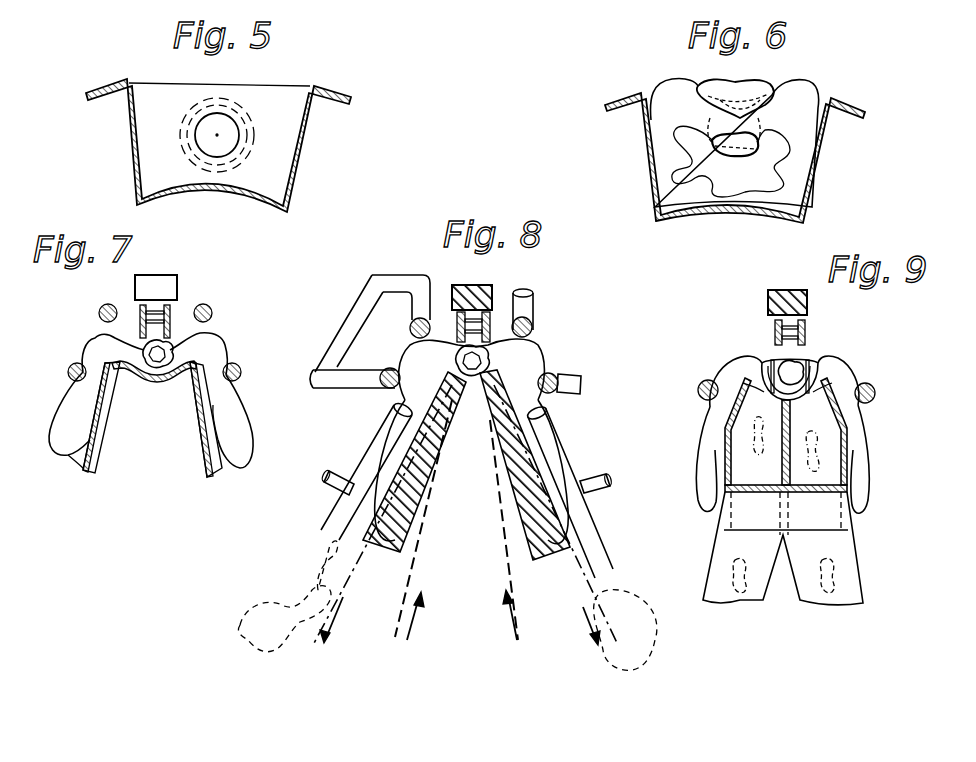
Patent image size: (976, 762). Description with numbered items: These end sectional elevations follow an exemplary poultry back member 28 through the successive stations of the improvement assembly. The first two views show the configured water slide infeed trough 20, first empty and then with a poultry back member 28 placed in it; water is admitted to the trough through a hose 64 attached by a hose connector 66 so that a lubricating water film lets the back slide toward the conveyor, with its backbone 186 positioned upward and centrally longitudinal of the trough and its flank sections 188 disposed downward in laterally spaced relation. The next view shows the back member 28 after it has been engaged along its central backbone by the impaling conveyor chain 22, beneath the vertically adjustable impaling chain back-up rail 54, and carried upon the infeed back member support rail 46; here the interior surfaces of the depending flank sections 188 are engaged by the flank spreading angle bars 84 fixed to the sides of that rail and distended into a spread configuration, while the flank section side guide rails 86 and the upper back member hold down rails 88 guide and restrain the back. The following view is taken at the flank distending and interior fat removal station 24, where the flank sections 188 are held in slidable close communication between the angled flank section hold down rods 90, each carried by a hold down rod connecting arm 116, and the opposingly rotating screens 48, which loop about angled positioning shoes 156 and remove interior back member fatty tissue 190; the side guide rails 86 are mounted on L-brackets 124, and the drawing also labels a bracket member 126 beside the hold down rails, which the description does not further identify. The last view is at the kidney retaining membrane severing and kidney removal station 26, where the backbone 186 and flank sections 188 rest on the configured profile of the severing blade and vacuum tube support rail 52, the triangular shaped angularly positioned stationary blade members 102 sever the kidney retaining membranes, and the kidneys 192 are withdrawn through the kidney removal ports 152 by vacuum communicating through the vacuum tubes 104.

In FIG. 5, the configured water slide infeed trough 20 is at (306, 150).
In FIG. 6, the configured water slide infeed trough 20 is at (821, 152).
In FIG. 7, the impaling conveyor chain 22 is at (171, 313).
In FIG. 8, the impaling conveyor chain 22 is at (492, 312).
In FIG. 9, the impaling conveyor chain 22 is at (775, 335).
In FIG. 8, the flank distending and interior fat removal station 24 is at (423, 250).
In FIG. 9, the kidney retaining membrane severing and kidney removal station 26 is at (729, 290).
In FIG. 6, the poultry back member 28 is at (786, 96).
In FIG. 7, the poultry back member 28 is at (205, 343).
In FIG. 8, the poultry back member 28 is at (542, 364).
In FIG. 9, the poultry back member 28 is at (784, 381).
In FIG. 7, the infeed back member support rail 46 is at (110, 420).
In FIG. 8, the rotating screens 48 is at (505, 547).
In FIG. 9, the severing blade and vacuum tube support rail 52 is at (725, 482).
In FIG. 7, the impaling chain back-up rail 54 is at (156, 274).
In FIG. 8, the impaling chain back-up rail 54 is at (490, 283).
In FIG. 9, the impaling chain back-up rail 54 is at (795, 288).
In FIG. 5, the hose 64 is at (192, 112).
In FIG. 5, the hose connector 66 is at (224, 110).
In FIG. 7, the flank spreading angle bars 84 is at (84, 469).
In FIG. 7, the flank section side guide rails 86 is at (74, 364).
In FIG. 8, the flank section side guide rails 86 is at (396, 368).
In FIG. 9, the flank section side guide rails 86 is at (700, 392).
In FIG. 7, the back member hold down rails 88 is at (101, 306).
In FIG. 8, the back member hold down rails 88 is at (412, 318).
In FIG. 8, the angled flank section hold down rods 90 is at (388, 455).
In FIG. 9, the triangular shaped angularly positioned stationary blade members 102 is at (770, 365).
In FIG. 9, the vacuum tubes 104 is at (850, 529).
In FIG. 8, the hold down rod connecting arm 116 is at (345, 478).
In FIG. 8, the L-brackets 124 is at (313, 370).
In FIG. 8, the arm 126 is at (400, 276).
In FIG. 9, the kidney removal ports 152 is at (768, 376).
In FIG. 8, the angled positioning shoes 156 is at (420, 452).
In FIG. 6, the backbone 186 is at (722, 83).
In FIG. 7, the backbone 186 is at (145, 352).
In FIG. 8, the backbone 186 is at (512, 358).
In FIG. 9, the backbone 186 is at (805, 358).
In FIG. 7, the flank sections 188 is at (56, 420).
In FIG. 8, the flank sections 188 is at (380, 435).
In FIG. 9, the flank sections 188 is at (706, 415).
In FIG. 8, the interior back member fatty tissue 190 is at (322, 548).
In FIG. 9, the kidneys 192 is at (752, 452).